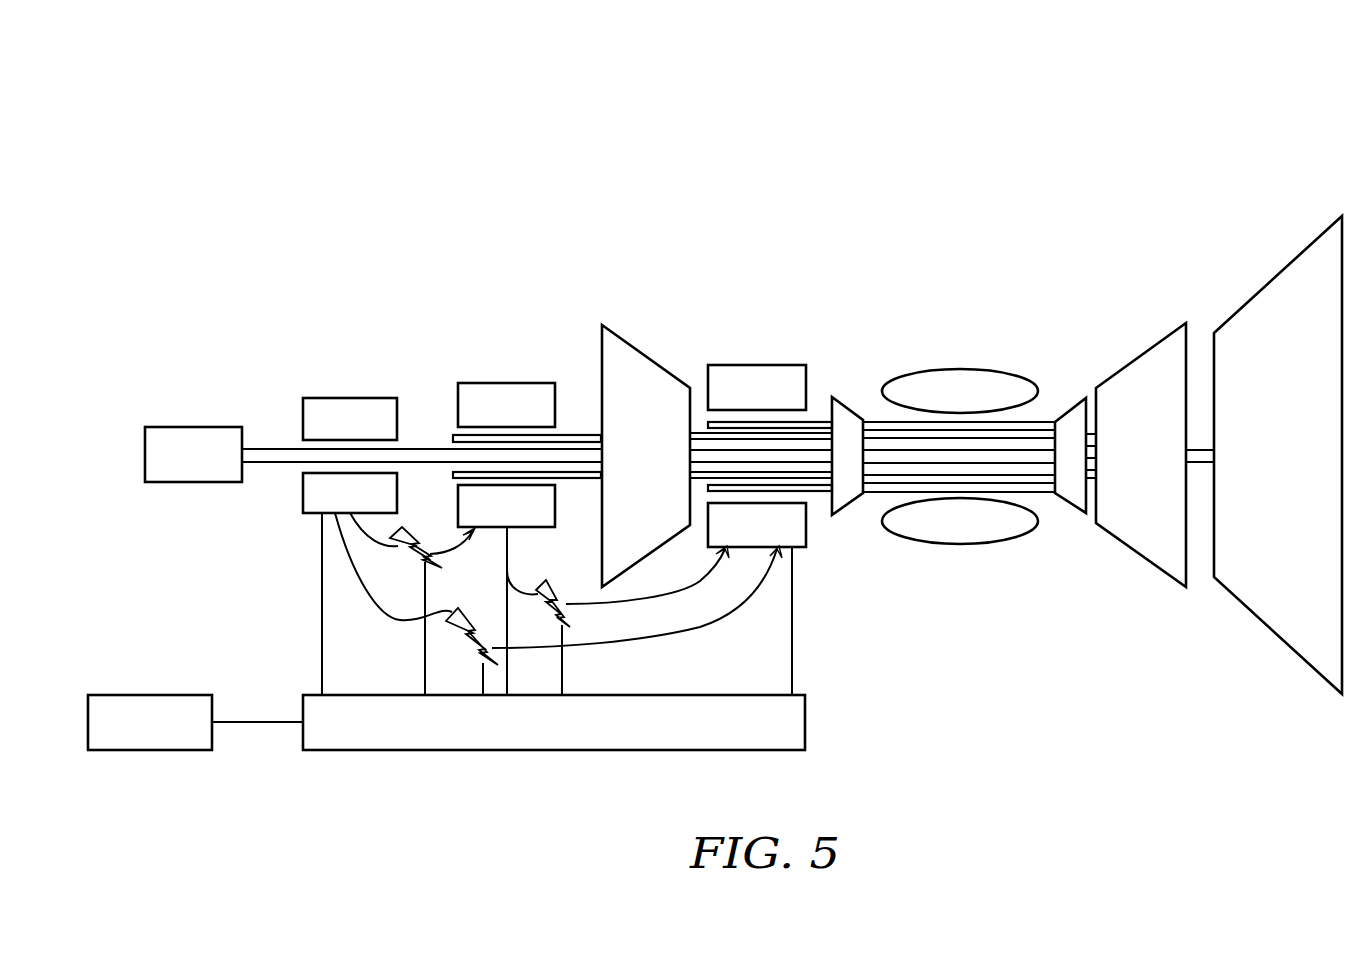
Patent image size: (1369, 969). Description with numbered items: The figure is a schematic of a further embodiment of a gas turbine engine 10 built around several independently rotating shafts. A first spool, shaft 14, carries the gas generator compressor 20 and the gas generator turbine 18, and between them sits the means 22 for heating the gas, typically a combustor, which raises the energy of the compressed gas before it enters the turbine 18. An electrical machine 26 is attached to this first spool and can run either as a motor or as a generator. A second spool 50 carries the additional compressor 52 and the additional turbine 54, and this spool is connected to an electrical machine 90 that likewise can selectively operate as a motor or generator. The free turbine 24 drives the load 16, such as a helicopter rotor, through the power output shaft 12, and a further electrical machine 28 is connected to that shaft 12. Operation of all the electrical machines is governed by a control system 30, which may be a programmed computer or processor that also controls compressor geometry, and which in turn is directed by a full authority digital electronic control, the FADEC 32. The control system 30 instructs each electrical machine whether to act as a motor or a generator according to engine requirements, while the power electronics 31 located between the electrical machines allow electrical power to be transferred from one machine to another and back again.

The gas turbine engine 10 is at (887, 117).
The shaft 12 is at (648, 412).
The shaft 14 is at (1052, 409).
The load 16 is at (193, 410).
The gas generator turbine 18 is at (1095, 395).
The gas generator compressor 20 is at (845, 418).
The means for heating the gas 22 is at (960, 416).
The turbine 24 is at (1278, 442).
The electrical machine 26 is at (757, 417).
The electrical machine 28 is at (350, 416).
The control system 30 is at (600, 631).
The power electronics 31 is at (558, 602).
The full authority digital electronic control (FADEC) 32 is at (195, 682).
The spool 50 is at (754, 410).
The compressor 52 is at (646, 423).
The turbine 54 is at (1155, 421).
The electrical machine 90 is at (506, 404).